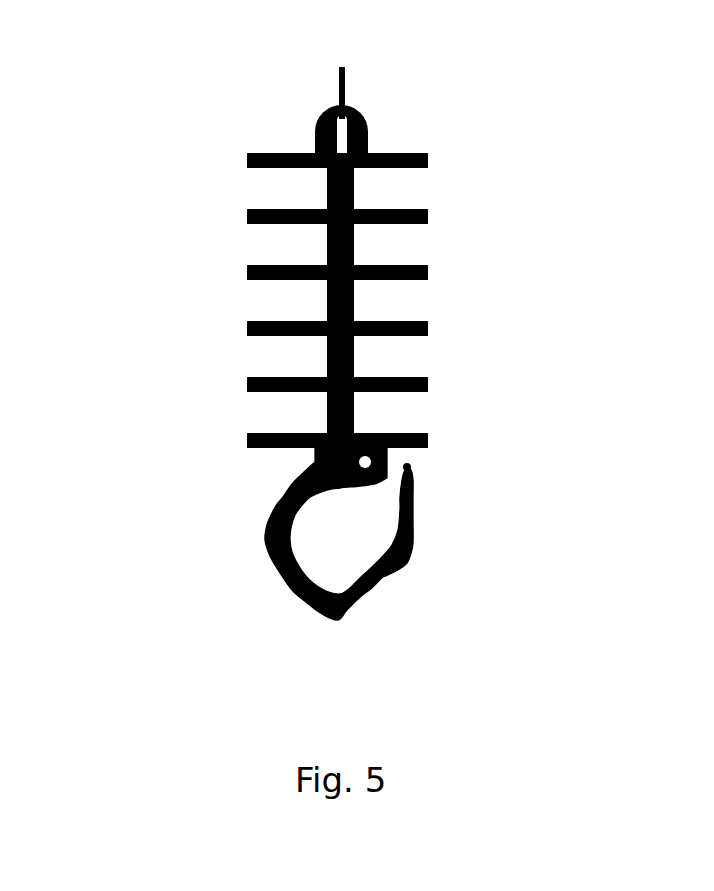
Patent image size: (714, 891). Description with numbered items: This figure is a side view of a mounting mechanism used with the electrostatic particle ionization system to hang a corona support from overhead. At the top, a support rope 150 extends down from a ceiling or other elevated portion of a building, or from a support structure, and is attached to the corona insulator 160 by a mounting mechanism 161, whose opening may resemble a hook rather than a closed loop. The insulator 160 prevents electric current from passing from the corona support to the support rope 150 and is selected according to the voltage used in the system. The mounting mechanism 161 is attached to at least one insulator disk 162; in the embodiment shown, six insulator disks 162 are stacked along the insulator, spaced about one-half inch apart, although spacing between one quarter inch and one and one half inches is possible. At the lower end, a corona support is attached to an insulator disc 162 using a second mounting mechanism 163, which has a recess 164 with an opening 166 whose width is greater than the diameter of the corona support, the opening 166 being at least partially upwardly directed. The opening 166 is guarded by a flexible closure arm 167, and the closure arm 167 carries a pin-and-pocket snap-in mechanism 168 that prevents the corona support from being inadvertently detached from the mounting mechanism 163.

The support rope 150 is at (338, 87).
The corona insulator 160 is at (148, 368).
The mounting mechanism 161 is at (368, 130).
The insulator disk 162 is at (428, 157).
The mounting mechanism 163 is at (275, 582).
The recess 164 is at (268, 517).
The opening 166 is at (338, 550).
The flexible closure arm 167 is at (417, 542).
The pin-and-pocket snap-in mechanism 168 is at (371, 460).